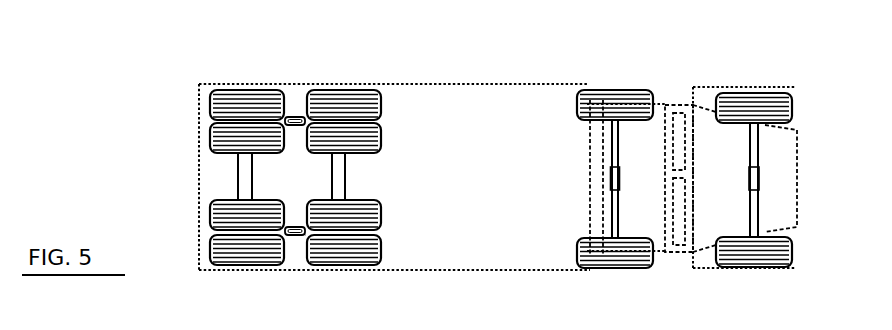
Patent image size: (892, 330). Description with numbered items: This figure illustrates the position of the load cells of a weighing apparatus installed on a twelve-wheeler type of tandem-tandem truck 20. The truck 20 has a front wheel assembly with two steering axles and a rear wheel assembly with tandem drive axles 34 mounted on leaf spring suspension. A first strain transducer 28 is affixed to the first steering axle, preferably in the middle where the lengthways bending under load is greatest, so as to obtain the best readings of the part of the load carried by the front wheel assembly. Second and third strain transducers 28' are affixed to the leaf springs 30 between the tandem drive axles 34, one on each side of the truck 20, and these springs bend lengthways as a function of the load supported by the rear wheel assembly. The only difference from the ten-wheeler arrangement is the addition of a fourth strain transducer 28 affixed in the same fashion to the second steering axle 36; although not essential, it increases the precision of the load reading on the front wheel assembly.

The tandem-tandem truck 20 is at (590, 66).
The strain transducer 28 is at (679, 186).
The strain transducer 28' is at (274, 172).
The leaf spring 30 is at (290, 115).
The tandem drive axles 34 is at (338, 172).
The second steering axle 36 is at (613, 152).